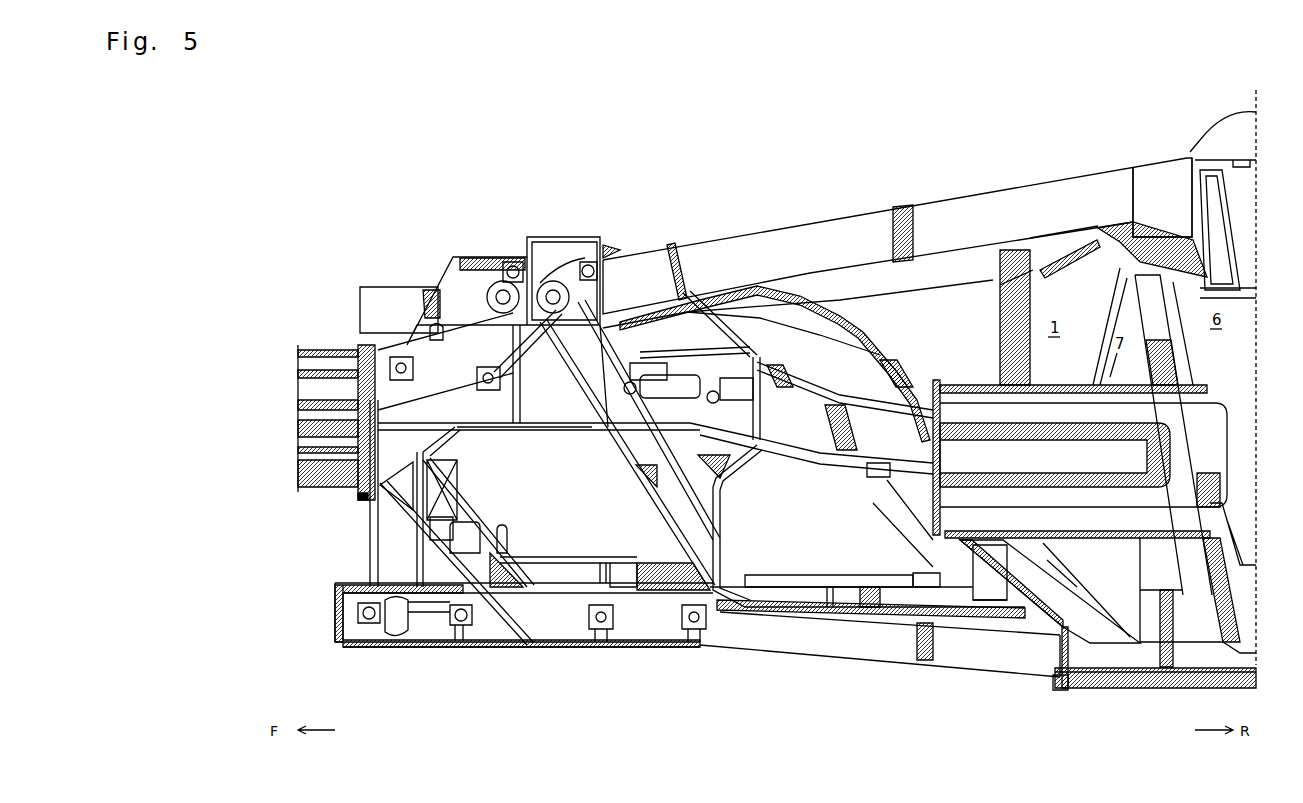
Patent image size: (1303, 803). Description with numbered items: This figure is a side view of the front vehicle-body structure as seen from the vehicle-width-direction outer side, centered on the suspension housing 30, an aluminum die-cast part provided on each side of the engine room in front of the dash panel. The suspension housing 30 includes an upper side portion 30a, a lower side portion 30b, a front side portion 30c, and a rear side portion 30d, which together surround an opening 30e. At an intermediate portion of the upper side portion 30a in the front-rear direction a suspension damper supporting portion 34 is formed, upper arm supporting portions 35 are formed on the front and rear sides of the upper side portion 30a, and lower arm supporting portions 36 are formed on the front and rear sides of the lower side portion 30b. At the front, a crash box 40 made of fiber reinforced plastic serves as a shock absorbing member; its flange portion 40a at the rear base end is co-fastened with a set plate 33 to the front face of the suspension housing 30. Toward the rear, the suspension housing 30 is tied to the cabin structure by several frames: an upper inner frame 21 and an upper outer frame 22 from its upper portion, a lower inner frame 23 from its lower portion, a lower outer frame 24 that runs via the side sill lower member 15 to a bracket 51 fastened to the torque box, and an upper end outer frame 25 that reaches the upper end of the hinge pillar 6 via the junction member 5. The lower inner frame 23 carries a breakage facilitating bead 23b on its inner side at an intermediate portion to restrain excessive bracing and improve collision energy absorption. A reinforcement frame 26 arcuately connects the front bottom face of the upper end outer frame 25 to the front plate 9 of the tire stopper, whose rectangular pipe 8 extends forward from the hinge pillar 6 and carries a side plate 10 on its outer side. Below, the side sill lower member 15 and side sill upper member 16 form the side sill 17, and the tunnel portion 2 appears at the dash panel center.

The tunnel portion 2 is at (1094, 581).
The junction member 5 is at (1154, 209).
The hinge pillar 6 is at (1220, 230).
The rectangular pipe 8 is at (1036, 392).
The front plate 9 is at (930, 453).
The side plate 10 is at (1215, 425).
The side sill lower member 15 is at (1130, 688).
The side sill upper member 16 is at (1250, 537).
The side sill 17 is at (1104, 701).
The upper inner frame 21 is at (930, 268).
The upper outer frame 22 is at (797, 425).
The lower inner frame 23 is at (865, 590).
The breakage facilitating bead 23b is at (828, 592).
The lower outer frame 24 is at (836, 655).
The upper end outer frame 25 is at (847, 224).
The reinforcement frame 26 is at (847, 337).
The suspension housing 30 is at (493, 232).
The upper side portion 30a is at (545, 232).
The lower side portion 30b is at (540, 652).
The front side portion 30c is at (370, 548).
The rear side portion 30d is at (728, 522).
The opening 30e is at (524, 459).
The set plate 33 is at (358, 348).
The suspension damper supporting portion 34 is at (587, 258).
The upper arm supporting portion 35 is at (645, 360).
The lower arm supporting portion 36 is at (443, 622).
The crash box 40 is at (300, 436).
The flange portion 40a is at (298, 432).
The bracket 51 is at (1060, 650).